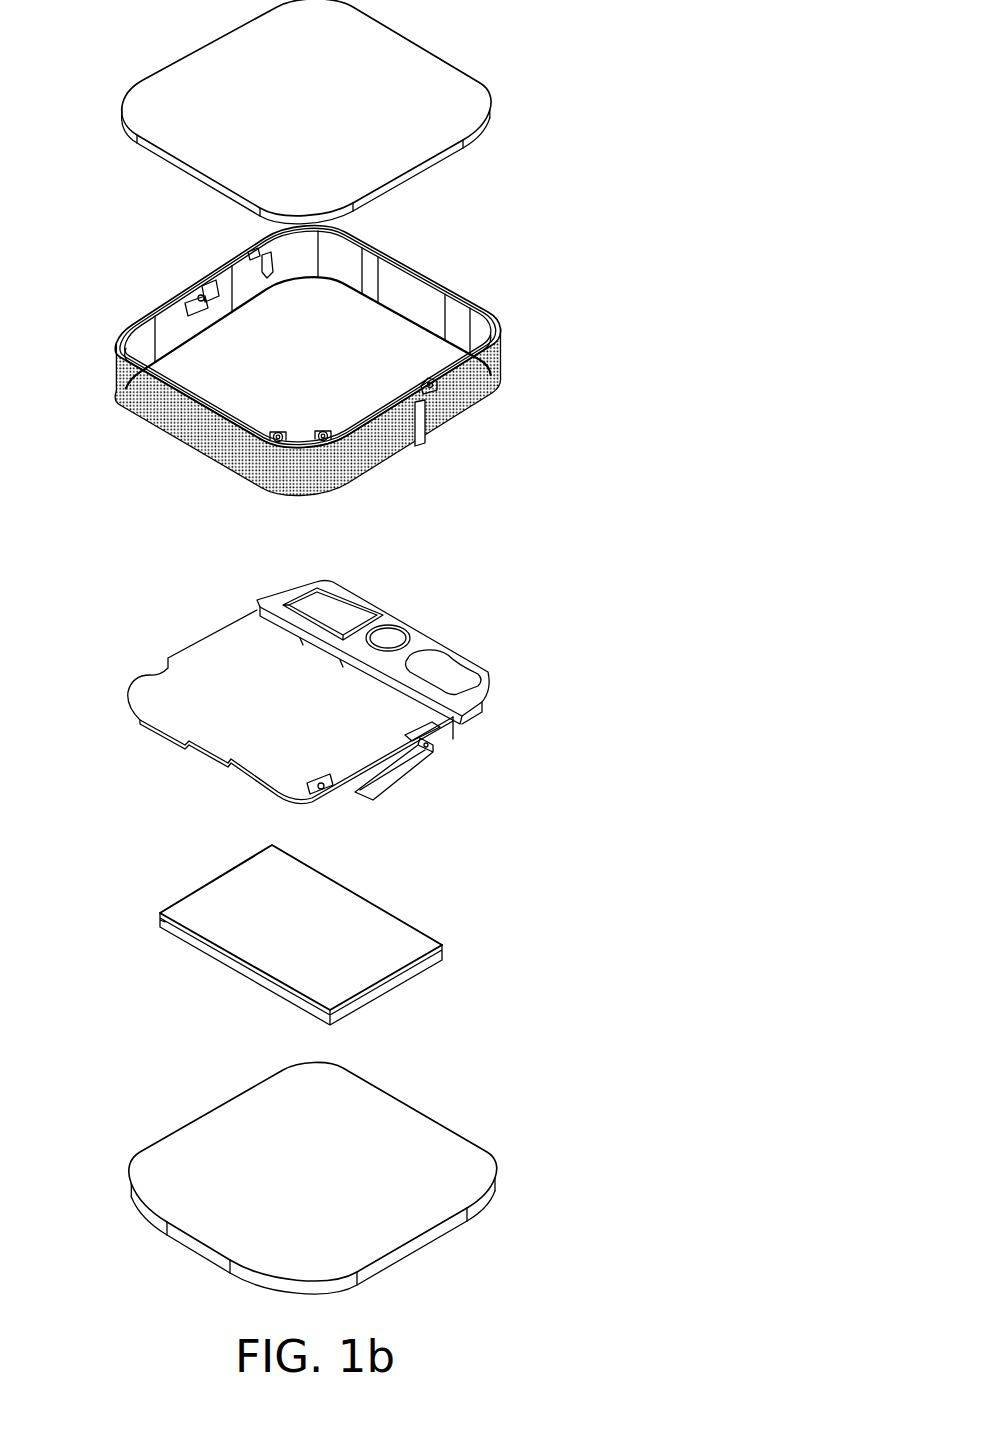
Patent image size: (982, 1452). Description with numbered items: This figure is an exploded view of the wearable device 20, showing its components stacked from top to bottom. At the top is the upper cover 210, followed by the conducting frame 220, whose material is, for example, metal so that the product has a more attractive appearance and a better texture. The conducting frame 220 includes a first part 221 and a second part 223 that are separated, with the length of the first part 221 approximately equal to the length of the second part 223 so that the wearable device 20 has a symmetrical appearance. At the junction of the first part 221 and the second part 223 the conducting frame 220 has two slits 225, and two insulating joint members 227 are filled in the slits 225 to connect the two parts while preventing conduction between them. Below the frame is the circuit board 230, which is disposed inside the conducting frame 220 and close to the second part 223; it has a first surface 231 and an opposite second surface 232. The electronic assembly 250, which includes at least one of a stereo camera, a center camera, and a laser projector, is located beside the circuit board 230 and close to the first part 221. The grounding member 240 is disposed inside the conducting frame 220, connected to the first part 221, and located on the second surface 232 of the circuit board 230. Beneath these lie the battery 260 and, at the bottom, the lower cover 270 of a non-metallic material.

The wearable device 20 is at (657, 398).
The upper cover 210 is at (456, 95).
The conducting frame 220 is at (351, 365).
The first part 221 is at (495, 397).
The second part 223 is at (228, 467).
The slit 225 is at (200, 272).
The insulating joint member 227 is at (200, 268).
The circuit board 230 is at (253, 700).
The first surface 231 is at (220, 658).
The second surface 232 is at (157, 738).
The grounding member 240 is at (400, 780).
The electronic assembly 250 is at (432, 640).
The battery 260 is at (232, 890).
The lower cover 270 is at (422, 1135).